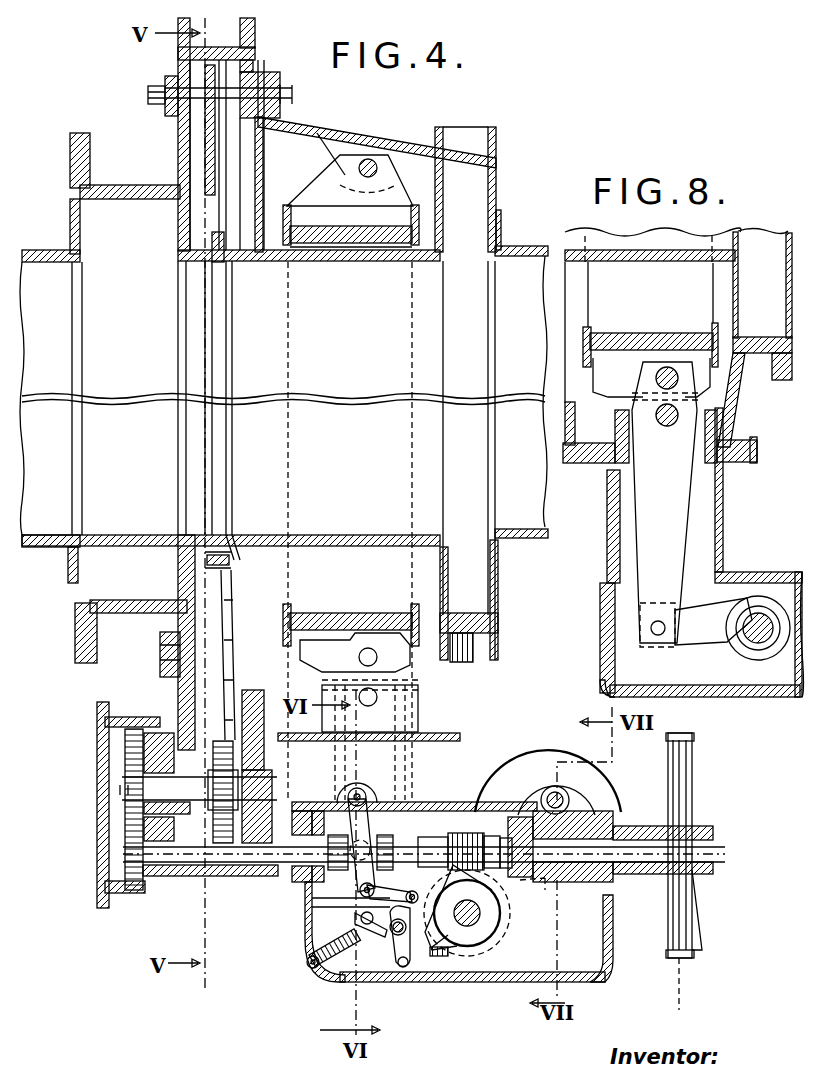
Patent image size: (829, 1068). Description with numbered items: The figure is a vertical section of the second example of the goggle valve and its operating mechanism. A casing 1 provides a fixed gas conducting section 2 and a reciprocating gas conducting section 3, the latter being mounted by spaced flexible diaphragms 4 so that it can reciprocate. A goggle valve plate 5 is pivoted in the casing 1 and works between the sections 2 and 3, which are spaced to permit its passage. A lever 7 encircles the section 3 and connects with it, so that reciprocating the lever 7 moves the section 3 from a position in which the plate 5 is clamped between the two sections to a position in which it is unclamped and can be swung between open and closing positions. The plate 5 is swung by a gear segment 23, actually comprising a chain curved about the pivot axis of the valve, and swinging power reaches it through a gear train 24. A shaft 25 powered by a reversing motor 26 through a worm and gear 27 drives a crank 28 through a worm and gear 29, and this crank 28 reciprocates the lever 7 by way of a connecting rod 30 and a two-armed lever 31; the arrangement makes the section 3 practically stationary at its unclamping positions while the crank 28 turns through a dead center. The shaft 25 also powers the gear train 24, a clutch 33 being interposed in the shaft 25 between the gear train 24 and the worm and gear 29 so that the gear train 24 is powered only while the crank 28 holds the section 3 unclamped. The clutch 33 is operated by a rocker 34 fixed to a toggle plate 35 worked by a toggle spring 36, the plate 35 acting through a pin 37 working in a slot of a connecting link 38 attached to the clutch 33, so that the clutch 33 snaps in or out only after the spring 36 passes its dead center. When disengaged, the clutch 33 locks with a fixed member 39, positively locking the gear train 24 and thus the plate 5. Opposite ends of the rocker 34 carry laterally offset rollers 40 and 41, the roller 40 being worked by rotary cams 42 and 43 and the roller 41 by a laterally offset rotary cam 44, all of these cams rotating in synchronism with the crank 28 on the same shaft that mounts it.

In FIG. 4, the casing 1 is at (392, 145).
In FIG. 8, the casing 1 is at (735, 395).
In FIG. 4, the fixed gas conducting section 2 is at (190, 262).
In FIG. 4, the reciprocating gas conducting section 3 is at (302, 262).
In FIG. 8, the reciprocating gas conducting section 3 is at (692, 250).
In FIG. 4, the diaphragm 4 is at (262, 160).
In FIG. 8, the diaphragm 4 is at (740, 294).
In FIG. 4, the goggle valve plate 5 is at (234, 535).
In FIG. 4, the lever 7 is at (347, 225).
In FIG. 8, the lever 7 is at (609, 333).
In FIG. 4, the gear segment 23 is at (202, 555).
In FIG. 4, the gear train 24 is at (225, 760).
In FIG. 4, the shaft 25 is at (241, 866).
In FIG. 4, the reversing motor 26 is at (550, 750).
In FIG. 4, the worm and gear 27 is at (585, 800).
In FIG. 4, the crank 28 is at (480, 913).
In FIG. 8, the crank 28 is at (759, 615).
In FIG. 4, the worm and gear 29 is at (482, 836).
In FIG. 8, the connecting rod 30 is at (707, 630).
In FIG. 4, the two-armed lever 31 is at (348, 685).
In FIG. 8, the two-armed lever 31 is at (676, 483).
In FIG. 4, the clutch 33 is at (374, 822).
In FIG. 4, the rocker 34 is at (407, 963).
In FIG. 4, the toggle plate 35 is at (408, 905).
In FIG. 4, the toggle spring 36 is at (355, 924).
In FIG. 4, the pin 37 is at (332, 958).
In FIG. 4, the connecting link 38 is at (345, 904).
In FIG. 4, the fixed member 39 is at (312, 811).
In FIG. 4, the roller 40 is at (402, 835).
In FIG. 4, the roller 41 is at (398, 935).
In FIG. 4, the rotary cam 42 is at (428, 837).
In FIG. 4, the rotary cam 43 is at (464, 950).
In FIG. 4, the rotary cam 44 is at (441, 952).